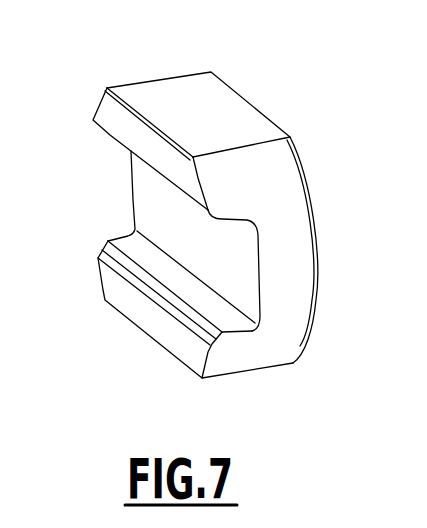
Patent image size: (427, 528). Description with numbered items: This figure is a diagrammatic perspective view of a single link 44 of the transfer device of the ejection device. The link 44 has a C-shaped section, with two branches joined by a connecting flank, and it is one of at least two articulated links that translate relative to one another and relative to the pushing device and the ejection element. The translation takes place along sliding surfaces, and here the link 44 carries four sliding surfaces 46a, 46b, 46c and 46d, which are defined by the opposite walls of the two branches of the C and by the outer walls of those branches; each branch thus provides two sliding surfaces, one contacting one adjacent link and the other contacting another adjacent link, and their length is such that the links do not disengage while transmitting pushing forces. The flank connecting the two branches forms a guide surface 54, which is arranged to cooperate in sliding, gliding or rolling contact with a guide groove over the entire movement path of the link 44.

The link 44 is at (350, 178).
The sliding surface 46a is at (172, 97).
The sliding surface 46b is at (112, 137).
The sliding surface 46c is at (153, 266).
The sliding surface 46d is at (162, 350).
The guide surface 54 is at (280, 262).